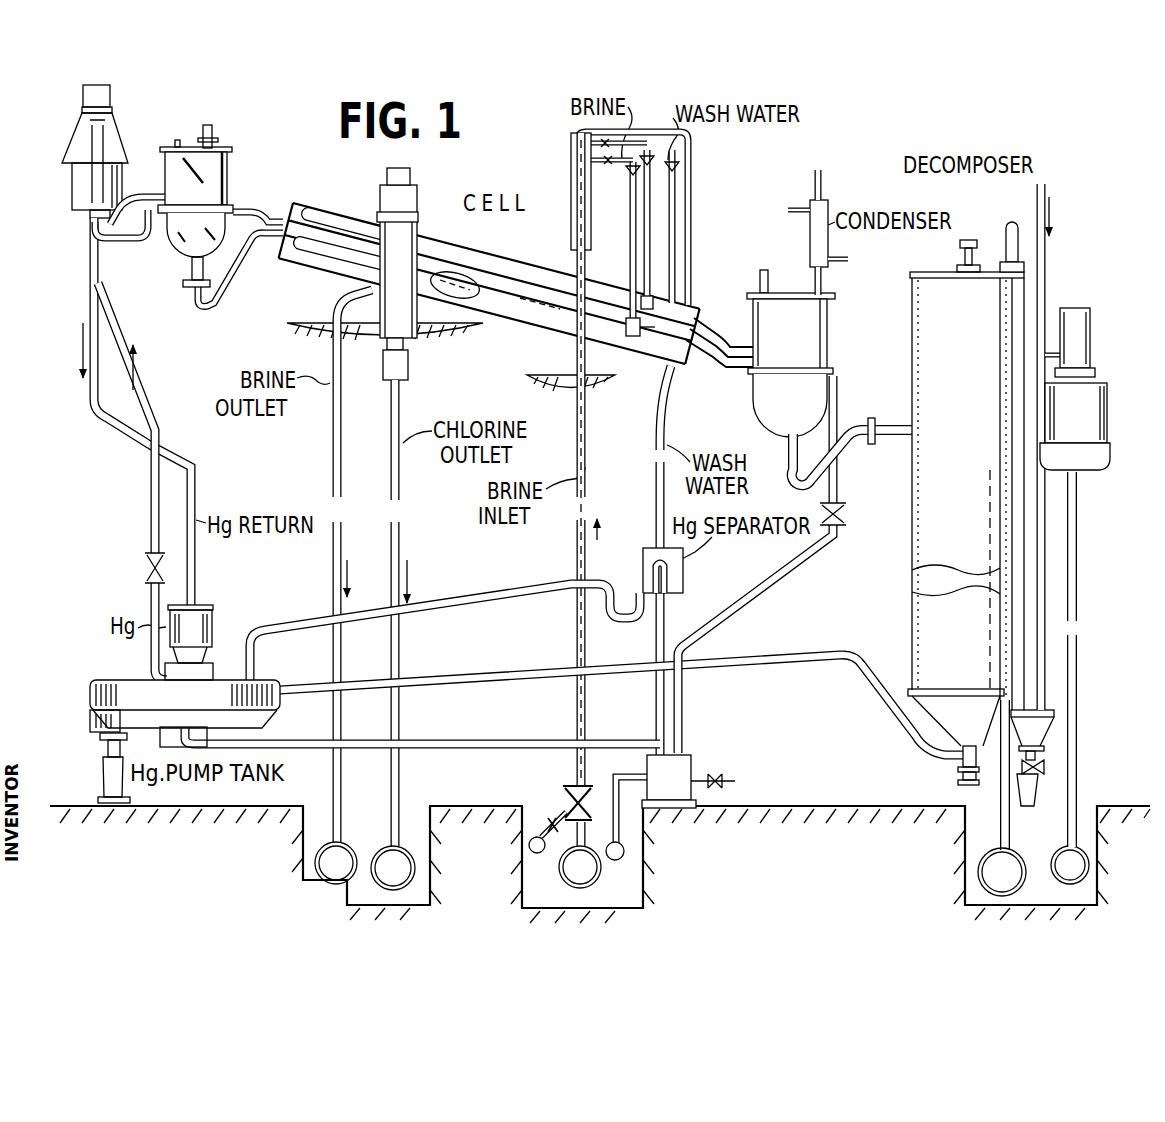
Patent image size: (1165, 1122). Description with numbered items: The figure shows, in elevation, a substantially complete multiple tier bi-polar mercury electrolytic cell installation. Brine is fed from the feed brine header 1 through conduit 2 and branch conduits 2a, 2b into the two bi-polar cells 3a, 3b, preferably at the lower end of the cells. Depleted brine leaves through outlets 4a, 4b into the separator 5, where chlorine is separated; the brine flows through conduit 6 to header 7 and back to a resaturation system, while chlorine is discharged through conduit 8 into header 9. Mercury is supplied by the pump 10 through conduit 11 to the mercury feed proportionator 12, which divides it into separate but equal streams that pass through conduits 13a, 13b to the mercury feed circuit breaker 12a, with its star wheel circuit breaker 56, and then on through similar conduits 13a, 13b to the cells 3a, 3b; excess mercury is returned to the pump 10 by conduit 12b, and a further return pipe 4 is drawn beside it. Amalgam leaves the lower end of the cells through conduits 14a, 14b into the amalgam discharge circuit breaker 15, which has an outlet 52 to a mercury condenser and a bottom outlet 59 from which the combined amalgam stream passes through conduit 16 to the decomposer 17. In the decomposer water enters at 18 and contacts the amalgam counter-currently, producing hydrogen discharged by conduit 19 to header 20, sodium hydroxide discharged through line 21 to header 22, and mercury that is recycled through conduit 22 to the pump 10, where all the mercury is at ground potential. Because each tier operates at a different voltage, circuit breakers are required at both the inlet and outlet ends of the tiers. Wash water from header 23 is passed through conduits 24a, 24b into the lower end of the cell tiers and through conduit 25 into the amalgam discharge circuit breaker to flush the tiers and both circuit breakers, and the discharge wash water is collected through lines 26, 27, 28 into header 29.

The feed brine header 1 is at (588, 873).
The conduit 2 is at (590, 709).
The conduit 2a is at (630, 247).
The conduit 2b is at (643, 198).
The bi-polar cell 3a is at (510, 262).
The bi-polar cell 3b is at (508, 318).
The mercury pipe 4 is at (120, 437).
The outlet 4a is at (338, 222).
The outlet 4b is at (337, 250).
The separator 5 is at (412, 338).
The conduit 6 is at (331, 468).
The header 7 is at (322, 845).
The conduit 8 is at (403, 489).
The header 9 is at (387, 848).
The pump 10 is at (229, 662).
The conduit 11 is at (155, 489).
The mercury feed proportionator 12 is at (68, 181).
The mercury feed circuit breaker 12a is at (212, 168).
The conduit 12b is at (196, 472).
The conduit 13a is at (140, 192).
The conduit 13b is at (118, 238).
The conduit 14a is at (712, 336).
The conduit 14b is at (708, 362).
The amalgam discharge circuit breaker 15 is at (832, 341).
The conduit 16 is at (790, 470).
The decomposer 17 is at (908, 340).
The water inlet 18 is at (1046, 292).
The conduit 19 is at (1010, 224).
The header 20 is at (978, 876).
The line 21 is at (1078, 554).
The header 22 is at (534, 672).
The wash water header 23 is at (537, 853).
The conduit 24a is at (689, 200).
The conduit 24b is at (676, 250).
The conduit 25 is at (177, 141).
The line 26 is at (656, 507).
The line 27 is at (748, 612).
The line 28 is at (497, 740).
The header 29 is at (623, 836).
The outlet 52 is at (213, 130).
The star wheel circuit breaker 56 is at (176, 222).
The outlet 59 is at (192, 270).